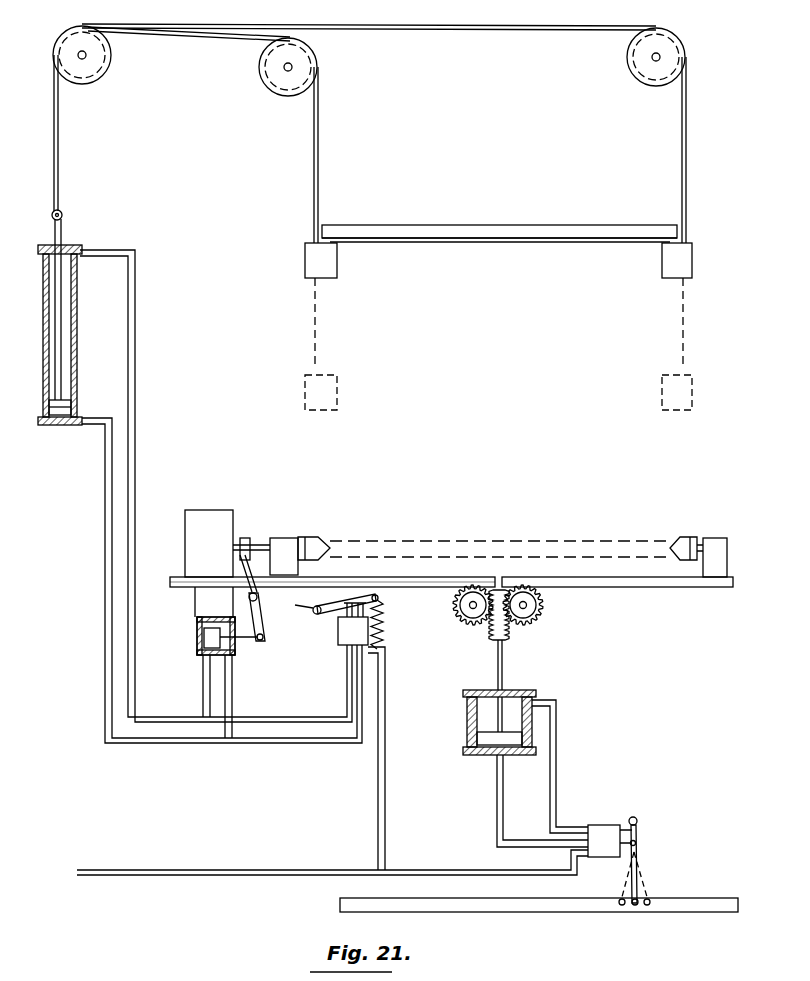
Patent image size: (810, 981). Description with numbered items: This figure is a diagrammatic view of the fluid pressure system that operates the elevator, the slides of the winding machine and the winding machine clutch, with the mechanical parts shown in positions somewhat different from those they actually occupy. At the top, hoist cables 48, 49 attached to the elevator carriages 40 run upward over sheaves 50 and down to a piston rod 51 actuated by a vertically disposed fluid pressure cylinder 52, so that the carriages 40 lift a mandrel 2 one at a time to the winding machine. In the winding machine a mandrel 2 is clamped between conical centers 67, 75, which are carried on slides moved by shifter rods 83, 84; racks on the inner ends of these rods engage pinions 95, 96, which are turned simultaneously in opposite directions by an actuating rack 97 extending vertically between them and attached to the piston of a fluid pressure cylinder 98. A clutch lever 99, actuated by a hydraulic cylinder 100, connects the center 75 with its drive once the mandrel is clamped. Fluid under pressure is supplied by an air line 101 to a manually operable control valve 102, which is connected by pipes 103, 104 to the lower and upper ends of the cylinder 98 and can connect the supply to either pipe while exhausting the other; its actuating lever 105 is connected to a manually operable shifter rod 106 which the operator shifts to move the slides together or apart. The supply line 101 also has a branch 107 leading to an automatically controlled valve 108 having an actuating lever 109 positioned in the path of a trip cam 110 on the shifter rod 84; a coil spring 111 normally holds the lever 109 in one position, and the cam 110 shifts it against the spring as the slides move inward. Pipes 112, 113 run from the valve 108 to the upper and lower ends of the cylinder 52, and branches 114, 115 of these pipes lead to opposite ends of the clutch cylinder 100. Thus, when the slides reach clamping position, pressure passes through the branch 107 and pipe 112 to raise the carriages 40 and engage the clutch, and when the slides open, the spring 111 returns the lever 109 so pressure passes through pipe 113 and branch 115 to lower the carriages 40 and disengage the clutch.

The mandrel 2 is at (498, 246).
The elevator carriage 40 is at (338, 268).
The hoist cable 48 is at (319, 156).
The hoist cable 49 is at (682, 150).
The sheave 50 is at (111, 62).
The piston rod 51 is at (66, 222).
The fluid pressure cylinder 52 is at (77, 356).
The conical center 67 is at (680, 537).
The conical center 75 is at (318, 537).
The shifter rod 83 is at (654, 588).
The shifter rod 84 is at (410, 588).
The pinion 95 is at (536, 612).
The pinion 96 is at (470, 618).
The actuating rack 97 is at (506, 632).
The fluid pressure cylinder 98 is at (475, 720).
The clutch lever 99 is at (263, 625).
The hydraulic cylinder 100 is at (198, 652).
The air line 101 is at (195, 874).
The manually operable control valve 102 is at (613, 826).
The pipe 103 is at (497, 790).
The pipe 104 is at (557, 778).
The actuating lever 105 is at (643, 881).
The shifter rod 106 is at (548, 910).
The branch 107 is at (378, 790).
The automatically controlled valve 108 is at (337, 640).
The actuating lever 109 is at (375, 596).
The trip cam 110 is at (311, 606).
The coil spring 111 is at (386, 636).
The pipe 112 is at (136, 497).
The pipe 113 is at (106, 568).
The branch 114 is at (203, 678).
The branch 115 is at (232, 688).